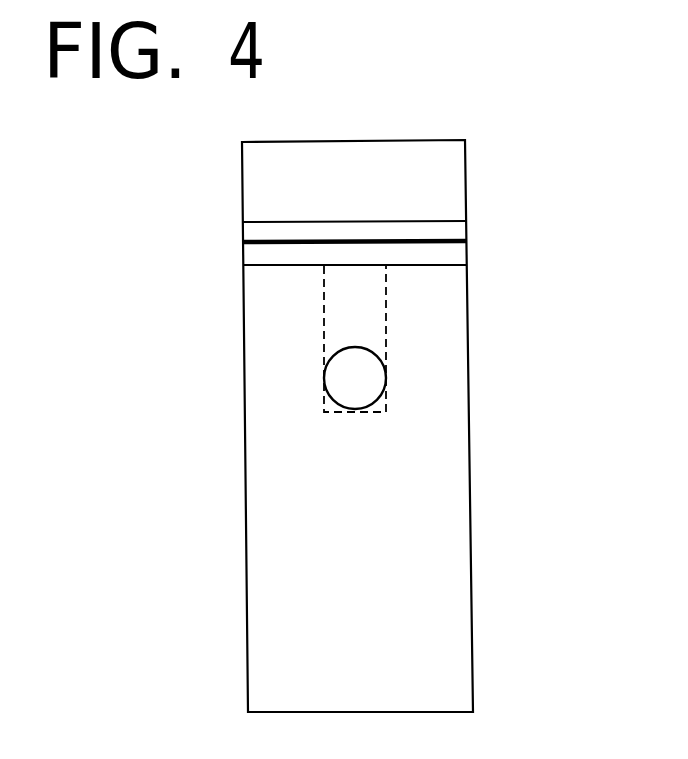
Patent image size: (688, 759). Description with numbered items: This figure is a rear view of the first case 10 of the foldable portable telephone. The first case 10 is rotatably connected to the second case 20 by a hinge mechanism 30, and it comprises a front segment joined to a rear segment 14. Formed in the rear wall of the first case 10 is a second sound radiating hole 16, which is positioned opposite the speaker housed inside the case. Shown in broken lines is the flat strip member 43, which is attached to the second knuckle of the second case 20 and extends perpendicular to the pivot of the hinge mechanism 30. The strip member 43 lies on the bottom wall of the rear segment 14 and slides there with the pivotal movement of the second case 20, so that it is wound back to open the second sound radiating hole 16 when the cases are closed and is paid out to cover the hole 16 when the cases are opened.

The first case 10 is at (455, 610).
The rear segment 14 is at (450, 423).
The second sound radiating hole 16 is at (330, 375).
The second case 20 is at (448, 182).
The hinge mechanism 30 is at (485, 239).
The flat strip member 43 is at (386, 330).